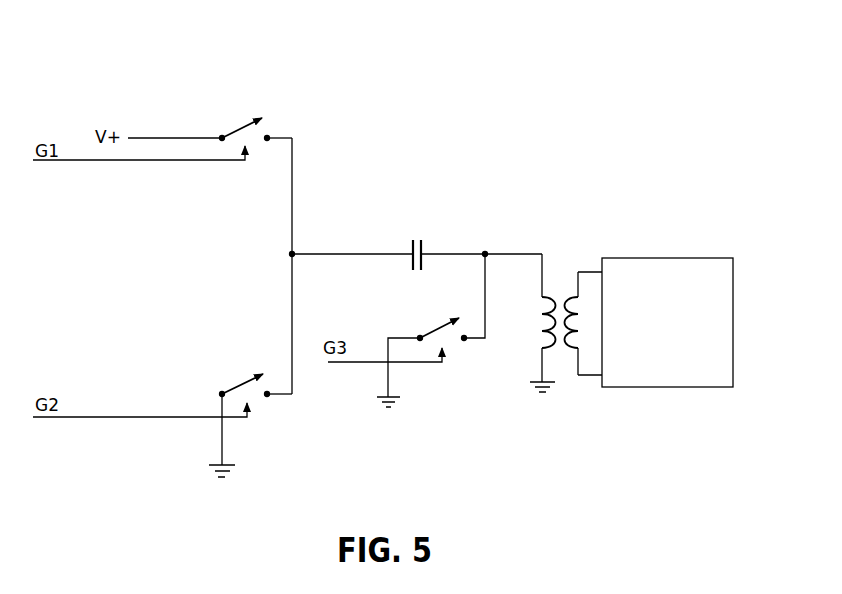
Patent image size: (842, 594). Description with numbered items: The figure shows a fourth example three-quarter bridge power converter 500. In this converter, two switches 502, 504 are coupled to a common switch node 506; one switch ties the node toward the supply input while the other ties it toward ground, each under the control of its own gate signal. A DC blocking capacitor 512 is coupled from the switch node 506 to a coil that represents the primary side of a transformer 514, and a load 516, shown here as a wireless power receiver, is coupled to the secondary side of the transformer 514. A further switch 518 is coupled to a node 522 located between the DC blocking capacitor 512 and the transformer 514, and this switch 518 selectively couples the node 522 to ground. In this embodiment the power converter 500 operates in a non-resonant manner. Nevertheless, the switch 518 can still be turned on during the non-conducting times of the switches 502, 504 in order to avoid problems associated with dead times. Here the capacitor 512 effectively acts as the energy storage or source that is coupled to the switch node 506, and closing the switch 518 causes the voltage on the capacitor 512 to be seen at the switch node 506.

The three-quarter bridge power converter 500 is at (640, 130).
The switch 502 is at (241, 126).
The switch 504 is at (238, 383).
The switch node 506 is at (296, 258).
The DC blocking capacitor 512 is at (410, 243).
The transformer 514 is at (562, 280).
The load 516 is at (676, 258).
The switch 518 is at (437, 325).
The node 522 is at (487, 250).